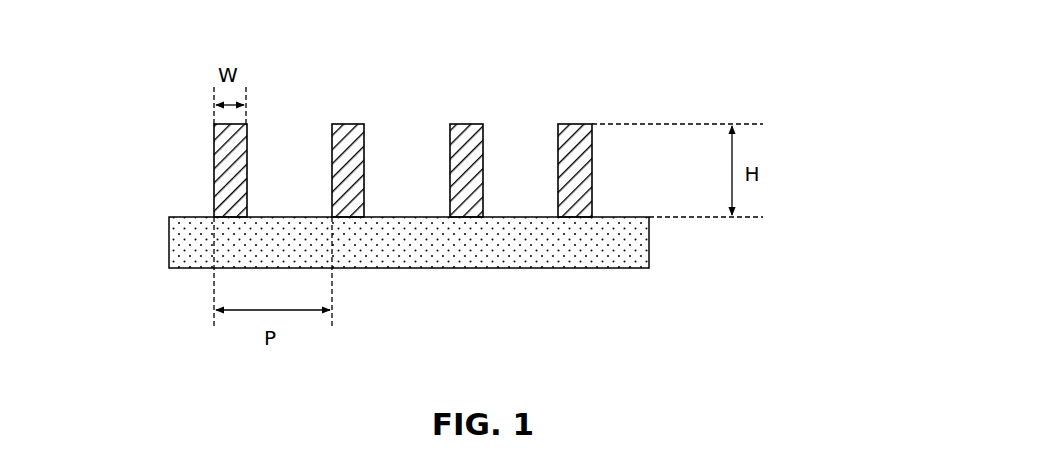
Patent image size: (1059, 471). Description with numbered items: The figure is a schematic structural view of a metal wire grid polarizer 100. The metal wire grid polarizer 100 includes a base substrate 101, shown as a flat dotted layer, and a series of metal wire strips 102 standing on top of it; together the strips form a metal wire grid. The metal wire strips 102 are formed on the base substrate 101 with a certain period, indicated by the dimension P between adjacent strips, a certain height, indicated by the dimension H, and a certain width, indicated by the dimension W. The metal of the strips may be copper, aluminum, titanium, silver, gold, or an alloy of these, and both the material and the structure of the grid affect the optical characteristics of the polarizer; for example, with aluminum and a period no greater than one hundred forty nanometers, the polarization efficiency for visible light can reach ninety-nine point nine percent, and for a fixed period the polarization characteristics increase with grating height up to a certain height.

The metal wire grid polarizer 100 is at (732, 58).
The base substrate 101 is at (162, 237).
The metal wire strips 102 is at (470, 124).